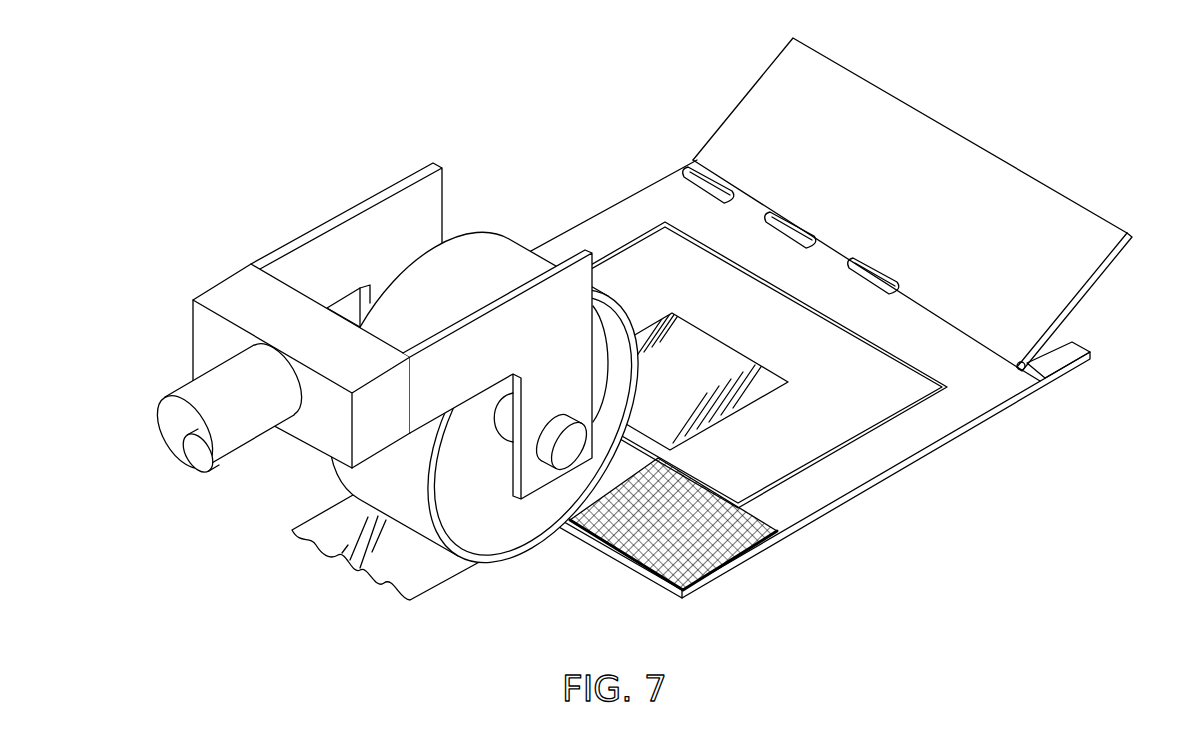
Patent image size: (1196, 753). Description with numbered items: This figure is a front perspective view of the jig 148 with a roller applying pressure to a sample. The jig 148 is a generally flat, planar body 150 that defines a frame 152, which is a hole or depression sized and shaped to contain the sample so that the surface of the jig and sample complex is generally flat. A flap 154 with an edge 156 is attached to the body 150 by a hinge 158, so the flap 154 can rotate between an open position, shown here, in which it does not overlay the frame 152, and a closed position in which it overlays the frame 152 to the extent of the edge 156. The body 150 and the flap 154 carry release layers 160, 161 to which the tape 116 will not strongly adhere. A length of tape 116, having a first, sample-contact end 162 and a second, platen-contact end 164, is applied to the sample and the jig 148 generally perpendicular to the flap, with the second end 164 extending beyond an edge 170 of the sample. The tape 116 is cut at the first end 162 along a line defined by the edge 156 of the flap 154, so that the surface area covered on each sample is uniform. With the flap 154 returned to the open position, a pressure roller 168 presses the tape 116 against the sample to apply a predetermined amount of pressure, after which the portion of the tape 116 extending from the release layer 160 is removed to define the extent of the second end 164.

The tape 116 is at (744, 400).
The jig 148 is at (1072, 353).
The body 150 is at (966, 405).
The frame 152 is at (637, 238).
The flap 154 is at (935, 204).
The edge 156 is at (990, 143).
The hinge 158 is at (1027, 370).
The release layer 160 is at (673, 534).
The release layer 161 is at (1103, 268).
The first, sample-contact end 162 is at (685, 374).
The second, platen-contact end 164 is at (316, 528).
The pressure roller 168 is at (220, 298).
The edge of sample 170 is at (705, 488).